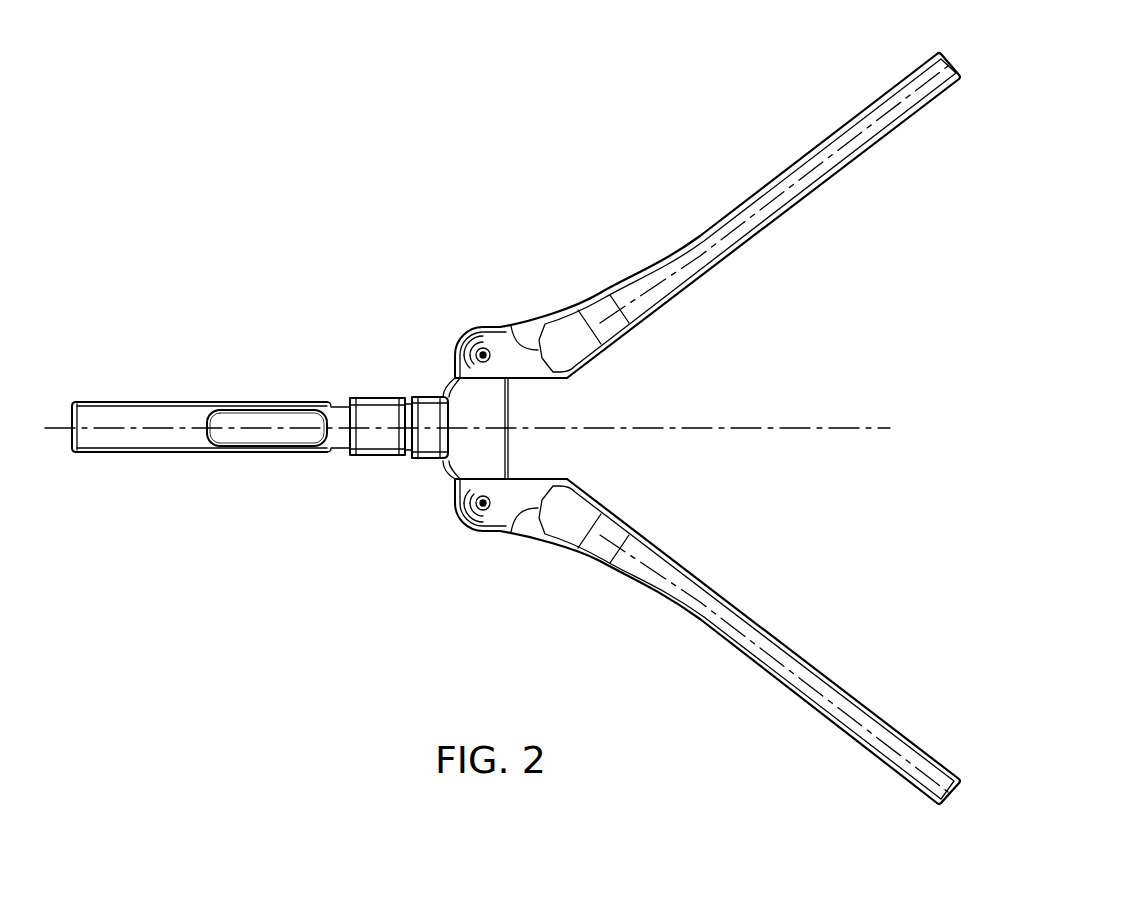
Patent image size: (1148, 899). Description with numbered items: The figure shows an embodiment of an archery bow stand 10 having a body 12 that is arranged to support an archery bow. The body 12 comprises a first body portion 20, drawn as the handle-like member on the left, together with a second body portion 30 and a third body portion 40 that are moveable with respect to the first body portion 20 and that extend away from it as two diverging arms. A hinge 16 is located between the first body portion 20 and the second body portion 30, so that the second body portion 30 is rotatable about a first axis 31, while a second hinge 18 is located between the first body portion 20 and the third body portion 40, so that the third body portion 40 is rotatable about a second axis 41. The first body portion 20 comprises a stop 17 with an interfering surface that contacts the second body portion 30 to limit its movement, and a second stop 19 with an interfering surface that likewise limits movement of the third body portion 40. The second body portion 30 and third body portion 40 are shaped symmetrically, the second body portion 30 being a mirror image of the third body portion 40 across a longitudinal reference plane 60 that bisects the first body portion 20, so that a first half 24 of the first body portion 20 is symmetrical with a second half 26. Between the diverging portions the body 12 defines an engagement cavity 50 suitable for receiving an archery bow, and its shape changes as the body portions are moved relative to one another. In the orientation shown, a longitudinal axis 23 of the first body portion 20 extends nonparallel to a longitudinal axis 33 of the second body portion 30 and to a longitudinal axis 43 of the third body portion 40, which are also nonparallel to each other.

The archery bow stand 10 is at (311, 224).
The body 12 is at (310, 456).
The hinge 16 is at (488, 514).
The stop 17 is at (460, 531).
The second hinge 18 is at (490, 344).
The second stop 19 is at (462, 328).
The first body portion 20 is at (145, 450).
The longitudinal axis 23 is at (188, 432).
The first half 24 is at (95, 450).
The second half 26 is at (104, 404).
The second body portion 30 is at (745, 648).
The first axis 31 is at (468, 503).
The longitudinal axis 33 is at (850, 720).
The third body portion 40 is at (782, 209).
The second axis 41 is at (468, 355).
The longitudinal axis 43 is at (857, 137).
The engagement cavity 50 is at (522, 423).
The longitudinal reference plane 60 is at (755, 431).